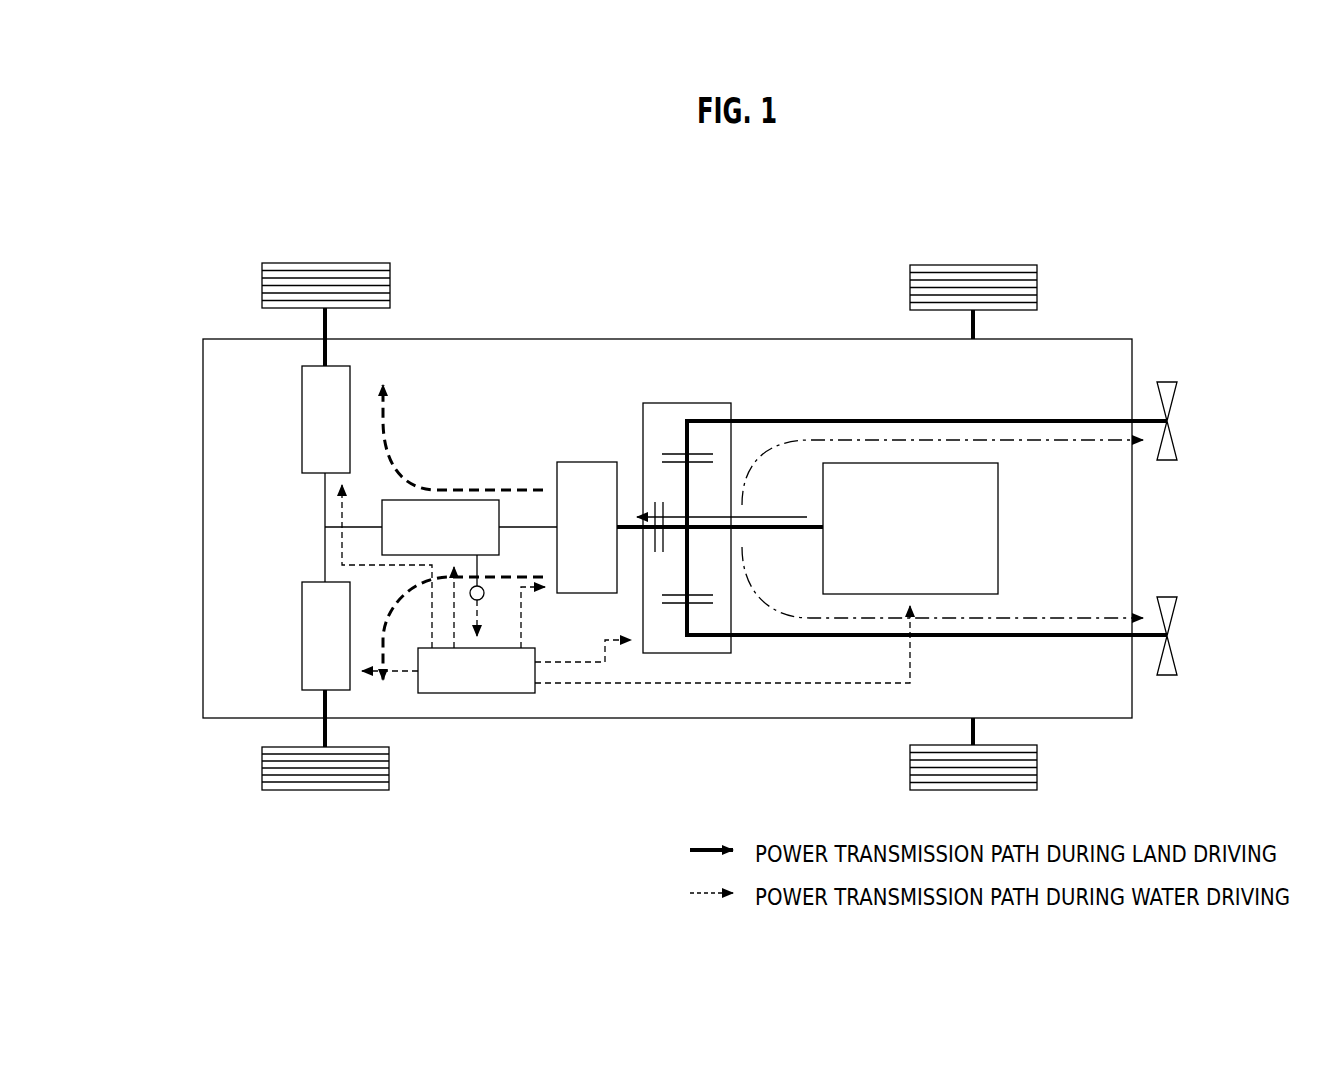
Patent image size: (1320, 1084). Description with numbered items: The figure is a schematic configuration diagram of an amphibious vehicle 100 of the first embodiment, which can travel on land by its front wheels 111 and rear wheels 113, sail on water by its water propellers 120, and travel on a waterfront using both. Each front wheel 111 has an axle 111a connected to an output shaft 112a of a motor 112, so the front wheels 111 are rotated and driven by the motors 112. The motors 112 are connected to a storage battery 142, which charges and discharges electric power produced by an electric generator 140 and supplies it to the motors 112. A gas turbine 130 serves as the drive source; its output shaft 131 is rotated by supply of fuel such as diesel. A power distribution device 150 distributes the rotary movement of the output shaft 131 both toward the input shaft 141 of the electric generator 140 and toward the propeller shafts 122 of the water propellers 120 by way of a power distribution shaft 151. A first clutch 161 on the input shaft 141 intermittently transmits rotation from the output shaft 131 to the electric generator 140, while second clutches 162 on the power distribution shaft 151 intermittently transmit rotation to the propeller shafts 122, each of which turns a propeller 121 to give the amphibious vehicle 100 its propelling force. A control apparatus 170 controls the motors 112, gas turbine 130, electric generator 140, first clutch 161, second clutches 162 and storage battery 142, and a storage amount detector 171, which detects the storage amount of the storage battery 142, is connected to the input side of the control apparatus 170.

The amphibious vehicle 100 is at (172, 738).
The front wheels 111 is at (325, 263).
The axle 111a is at (325, 322).
The motor 112 is at (302, 418).
The output shaft 112a is at (325, 355).
The rear wheels 113 is at (969, 265).
The water propeller 120 is at (1196, 499).
The propeller 121 is at (1177, 425).
The propeller shaft 122 is at (1047, 418).
The gas turbine 130 is at (1000, 527).
The output shaft 131 is at (790, 527).
The electric generator 140 is at (587, 462).
The input shaft 141 is at (631, 535).
The storage battery 142 is at (433, 490).
The power distribution device 150 is at (648, 665).
The power distribution shaft 151 is at (690, 565).
The first clutch 161 is at (655, 505).
The second clutch 162 is at (703, 455).
The control apparatus 170 is at (464, 693).
The storage amount detector 171 is at (484, 600).